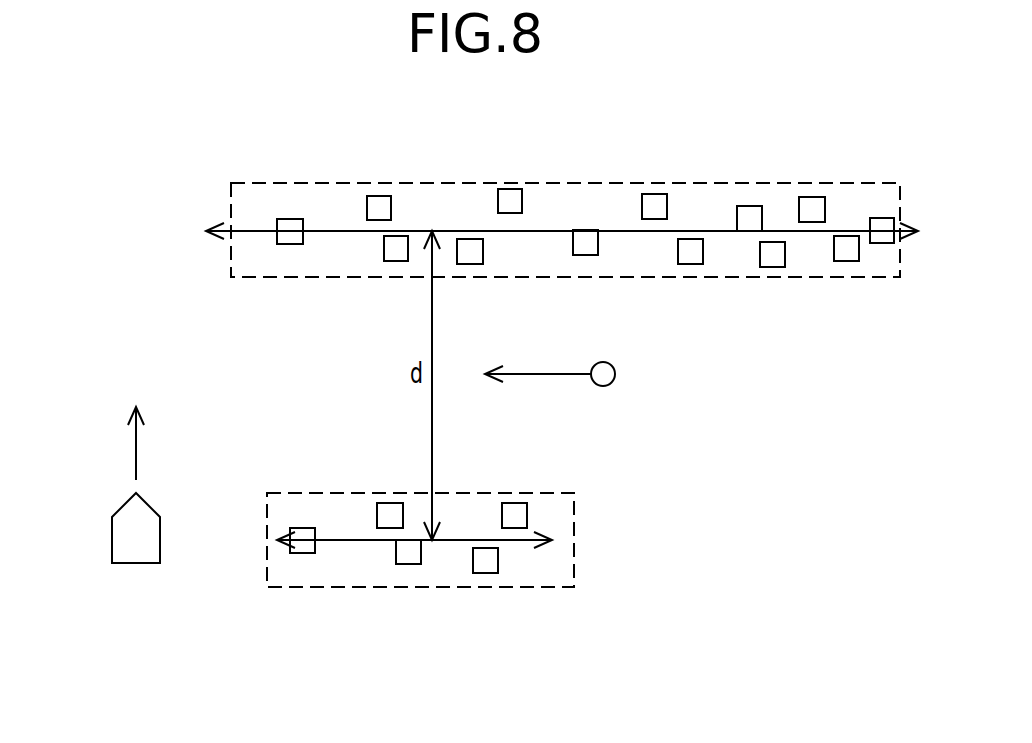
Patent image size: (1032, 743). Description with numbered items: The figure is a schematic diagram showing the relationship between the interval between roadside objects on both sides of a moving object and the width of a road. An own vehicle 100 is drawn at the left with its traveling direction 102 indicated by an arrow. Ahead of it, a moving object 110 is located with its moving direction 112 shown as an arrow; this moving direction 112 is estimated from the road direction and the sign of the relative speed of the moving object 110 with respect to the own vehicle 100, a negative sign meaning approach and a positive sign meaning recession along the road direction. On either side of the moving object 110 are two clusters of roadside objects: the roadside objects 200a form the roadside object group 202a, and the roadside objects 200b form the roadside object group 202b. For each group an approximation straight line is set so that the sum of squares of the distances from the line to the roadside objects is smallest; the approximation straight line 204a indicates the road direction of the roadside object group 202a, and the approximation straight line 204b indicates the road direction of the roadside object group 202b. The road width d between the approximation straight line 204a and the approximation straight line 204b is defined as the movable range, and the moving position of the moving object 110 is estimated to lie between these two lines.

The own vehicle 100 is at (136, 563).
The traveling direction of own vehicle 102 is at (136, 442).
The moving object 110 is at (615, 374).
The moving direction of moving object 112 is at (543, 378).
The roadside objects 200a is at (806, 197).
The roadside object group 202a is at (702, 182).
The approximation straight line 204a is at (457, 231).
The roadside objects 200b is at (300, 553).
The roadside object group 202b is at (575, 540).
The approximation straight line 204b is at (333, 538).